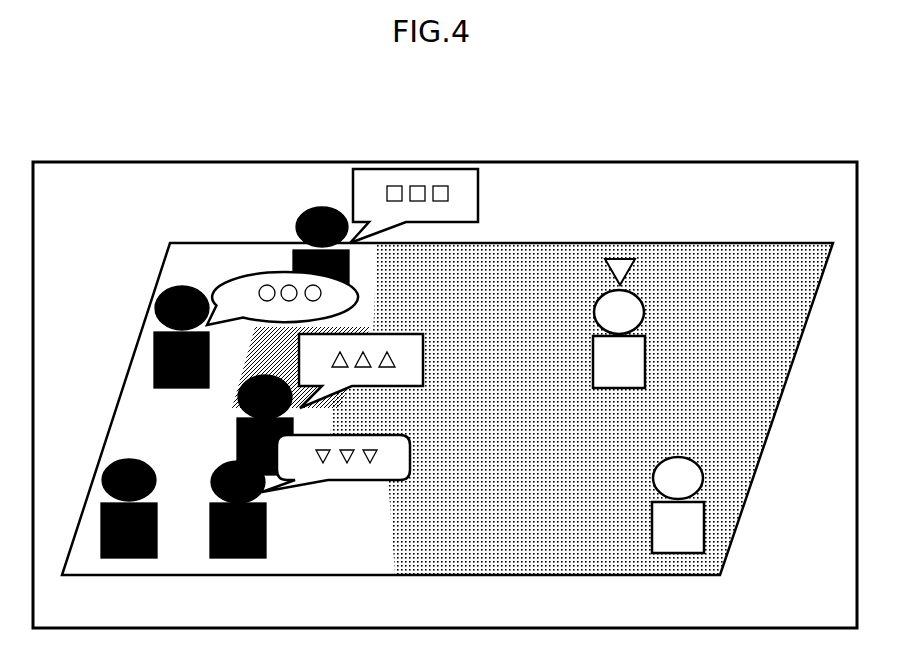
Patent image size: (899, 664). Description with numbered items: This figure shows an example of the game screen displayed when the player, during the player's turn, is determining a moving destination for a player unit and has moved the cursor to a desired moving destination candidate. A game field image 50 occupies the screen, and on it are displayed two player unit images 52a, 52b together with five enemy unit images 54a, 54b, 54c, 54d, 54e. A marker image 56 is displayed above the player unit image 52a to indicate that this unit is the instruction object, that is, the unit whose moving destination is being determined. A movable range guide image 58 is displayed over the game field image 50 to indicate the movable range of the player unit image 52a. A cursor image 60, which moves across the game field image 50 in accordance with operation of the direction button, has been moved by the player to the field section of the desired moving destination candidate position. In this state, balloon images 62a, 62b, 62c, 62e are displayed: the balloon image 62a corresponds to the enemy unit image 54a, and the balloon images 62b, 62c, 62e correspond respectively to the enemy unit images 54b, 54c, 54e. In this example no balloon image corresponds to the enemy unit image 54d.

The game field image 50 is at (753, 488).
The player unit image 52a is at (634, 303).
The player unit image 52b is at (682, 553).
The enemy unit image 54a is at (322, 208).
The enemy unit image 54b is at (154, 357).
The enemy unit image 54c is at (237, 443).
The enemy unit image 54d is at (118, 558).
The enemy unit image 54e is at (230, 558).
The marker image 56 is at (622, 258).
The movable range guide image 58 is at (518, 550).
The cursor image 60 is at (237, 408).
The balloon image 62a is at (425, 169).
The balloon image 62b is at (237, 272).
The balloon image 62c is at (400, 333).
The balloon image 62e is at (363, 482).